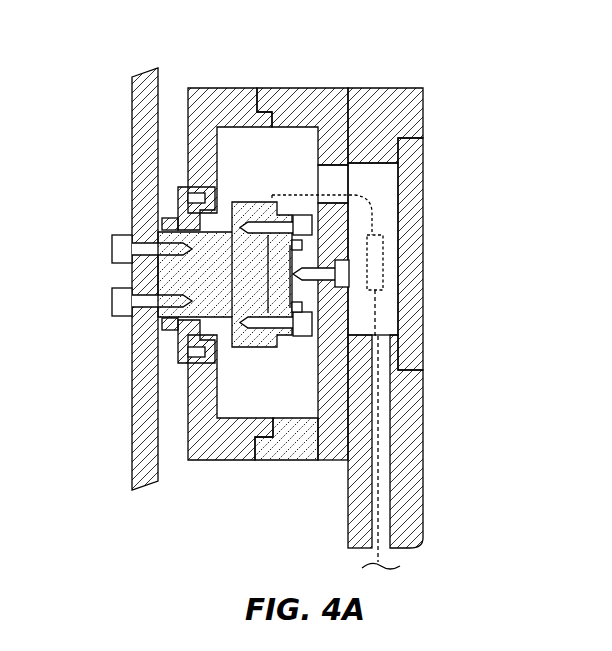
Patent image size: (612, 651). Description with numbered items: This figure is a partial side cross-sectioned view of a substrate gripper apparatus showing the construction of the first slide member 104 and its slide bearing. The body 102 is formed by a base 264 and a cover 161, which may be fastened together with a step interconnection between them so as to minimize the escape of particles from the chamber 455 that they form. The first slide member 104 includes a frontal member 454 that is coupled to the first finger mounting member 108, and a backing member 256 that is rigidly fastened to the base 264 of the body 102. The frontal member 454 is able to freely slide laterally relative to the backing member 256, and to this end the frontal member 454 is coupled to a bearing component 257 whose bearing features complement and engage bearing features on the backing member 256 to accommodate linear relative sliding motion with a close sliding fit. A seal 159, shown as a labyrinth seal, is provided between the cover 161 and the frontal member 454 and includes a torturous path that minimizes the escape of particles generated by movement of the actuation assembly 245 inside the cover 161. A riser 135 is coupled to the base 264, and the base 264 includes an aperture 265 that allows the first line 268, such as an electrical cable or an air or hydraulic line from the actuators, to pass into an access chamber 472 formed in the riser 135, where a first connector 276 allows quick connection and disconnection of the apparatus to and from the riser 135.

The body 102 is at (228, 86).
The first slide member 104 is at (153, 270).
The first finger mounting member 108 is at (131, 118).
The riser 135 is at (423, 452).
The seal 159 is at (171, 188).
The cover 161 is at (203, 88).
The actuation assembly 245 is at (385, 291).
The backing member 256 is at (320, 242).
The bearing component 257 is at (292, 214).
The base 264 is at (295, 88).
The aperture 265 is at (333, 177).
The first line 268 is at (380, 305).
The first connector 276 is at (387, 264).
The frontal member 454 is at (223, 275).
The chamber 455 is at (277, 400).
The access chamber 472 is at (377, 182).